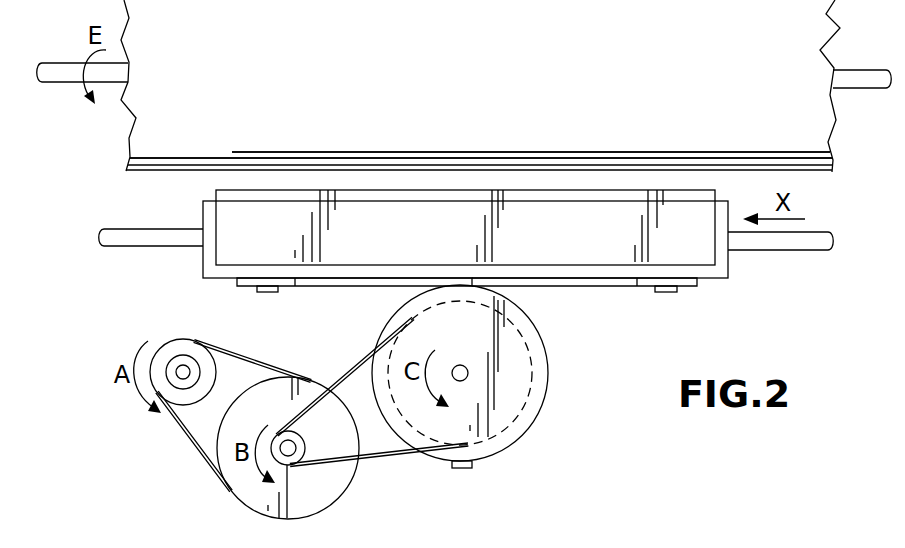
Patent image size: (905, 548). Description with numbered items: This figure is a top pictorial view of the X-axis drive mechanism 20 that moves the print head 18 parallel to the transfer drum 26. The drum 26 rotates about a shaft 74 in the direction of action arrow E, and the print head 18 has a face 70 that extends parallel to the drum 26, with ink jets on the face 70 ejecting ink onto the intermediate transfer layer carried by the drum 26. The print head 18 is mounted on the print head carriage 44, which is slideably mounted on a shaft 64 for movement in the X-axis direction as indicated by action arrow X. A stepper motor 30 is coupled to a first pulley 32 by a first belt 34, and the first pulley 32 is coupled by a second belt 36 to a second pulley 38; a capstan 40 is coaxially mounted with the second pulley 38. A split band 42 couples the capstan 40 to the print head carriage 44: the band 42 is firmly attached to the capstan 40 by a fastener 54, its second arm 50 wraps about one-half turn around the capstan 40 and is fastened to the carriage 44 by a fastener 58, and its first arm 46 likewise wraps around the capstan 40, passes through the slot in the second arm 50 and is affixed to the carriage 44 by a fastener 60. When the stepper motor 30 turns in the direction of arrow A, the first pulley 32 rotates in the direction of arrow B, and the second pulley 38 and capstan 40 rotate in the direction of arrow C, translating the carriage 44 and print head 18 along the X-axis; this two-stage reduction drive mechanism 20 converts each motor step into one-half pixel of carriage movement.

The print head 18 is at (404, 198).
The X-axis drive mechanism 20 is at (208, 491).
The transfer drum 26 is at (821, 128).
The stepper motor 30 is at (180, 339).
The first pulley 32 is at (302, 522).
The first belt 34 is at (192, 431).
The second belt 36 is at (393, 458).
The second pulley 38 is at (500, 440).
The capstan 40 is at (540, 380).
The split band 42 is at (546, 424).
The print head carriage 44 is at (729, 268).
The first arm 46 is at (330, 288).
The second arm 50 is at (586, 290).
The fastener 54 is at (462, 470).
The fastener 58 is at (666, 293).
The fastener 60 is at (268, 293).
The shaft 64 is at (805, 252).
The face 70 is at (597, 192).
The shaft 74 is at (60, 84).